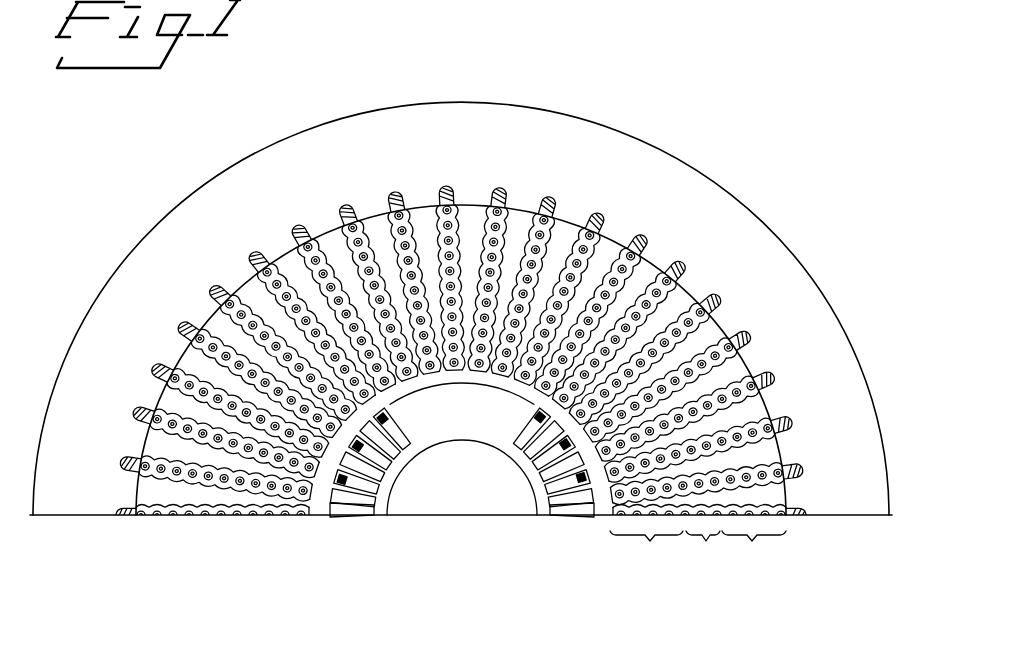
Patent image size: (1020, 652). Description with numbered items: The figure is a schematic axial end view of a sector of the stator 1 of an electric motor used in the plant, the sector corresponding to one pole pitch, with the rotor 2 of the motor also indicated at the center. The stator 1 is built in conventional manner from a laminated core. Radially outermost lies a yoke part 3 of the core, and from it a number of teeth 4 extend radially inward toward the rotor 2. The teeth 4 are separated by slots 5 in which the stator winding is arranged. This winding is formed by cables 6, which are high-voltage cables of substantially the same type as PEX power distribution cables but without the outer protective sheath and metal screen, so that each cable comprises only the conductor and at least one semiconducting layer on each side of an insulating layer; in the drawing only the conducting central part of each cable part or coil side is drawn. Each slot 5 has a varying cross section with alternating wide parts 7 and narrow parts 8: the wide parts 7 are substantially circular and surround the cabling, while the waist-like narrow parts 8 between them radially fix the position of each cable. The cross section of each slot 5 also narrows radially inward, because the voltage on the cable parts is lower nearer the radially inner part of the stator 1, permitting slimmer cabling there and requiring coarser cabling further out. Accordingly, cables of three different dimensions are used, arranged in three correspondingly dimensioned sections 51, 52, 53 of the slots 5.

The stator 1 is at (461, 295).
The rotor 2 is at (458, 505).
The yoke part 3 is at (615, 140).
The teeth 4 is at (652, 270).
The slots 5 is at (728, 353).
The cables 6 is at (760, 420).
The wide parts 7 is at (670, 295).
The narrow parts 8 is at (703, 317).
The section 51 is at (754, 555).
The section 52 is at (703, 555).
The section 53 is at (646, 555).